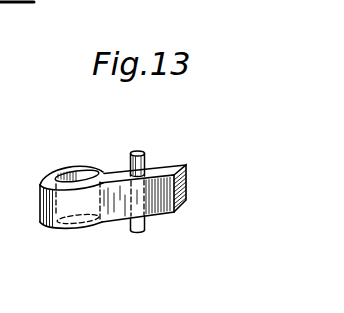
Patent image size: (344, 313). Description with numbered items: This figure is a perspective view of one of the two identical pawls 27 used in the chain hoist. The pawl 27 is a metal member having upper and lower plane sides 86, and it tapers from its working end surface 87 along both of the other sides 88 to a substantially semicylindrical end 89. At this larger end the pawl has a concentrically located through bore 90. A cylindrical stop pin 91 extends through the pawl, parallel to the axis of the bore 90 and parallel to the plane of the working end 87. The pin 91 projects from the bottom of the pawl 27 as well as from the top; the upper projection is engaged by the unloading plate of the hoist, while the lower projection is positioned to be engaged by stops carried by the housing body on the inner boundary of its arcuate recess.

The pawl 27 is at (124, 187).
The upper and lower plane sides 86 is at (154, 196).
The working end surface 87 is at (185, 179).
The other sides 88 is at (121, 215).
The semicylindrical end 89 is at (67, 182).
The through bore 90 is at (80, 173).
The cylindrical stop pin 91 is at (138, 152).